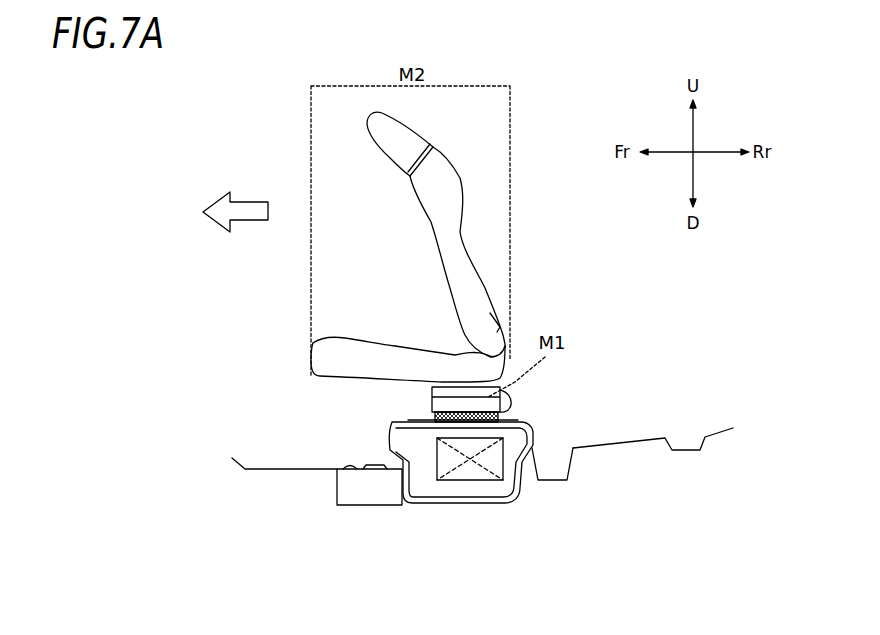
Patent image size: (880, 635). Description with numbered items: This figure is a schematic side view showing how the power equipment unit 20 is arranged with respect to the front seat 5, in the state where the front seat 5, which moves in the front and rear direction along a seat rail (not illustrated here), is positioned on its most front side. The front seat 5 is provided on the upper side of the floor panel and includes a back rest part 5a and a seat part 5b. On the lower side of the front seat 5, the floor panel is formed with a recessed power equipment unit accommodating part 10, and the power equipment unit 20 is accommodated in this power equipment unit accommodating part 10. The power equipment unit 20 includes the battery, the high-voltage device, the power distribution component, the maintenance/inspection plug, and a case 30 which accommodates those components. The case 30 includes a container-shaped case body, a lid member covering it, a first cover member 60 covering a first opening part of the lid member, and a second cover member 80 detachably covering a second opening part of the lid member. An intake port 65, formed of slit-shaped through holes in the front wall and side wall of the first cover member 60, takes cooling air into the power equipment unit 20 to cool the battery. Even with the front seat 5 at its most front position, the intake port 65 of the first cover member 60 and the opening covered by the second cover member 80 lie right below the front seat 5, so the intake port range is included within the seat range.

The front seat 5 is at (492, 240).
The back rest part 5a is at (445, 175).
The seat part 5b is at (352, 347).
The power equipment unit accommodating part 10 is at (480, 505).
The power equipment unit 20 is at (380, 446).
The case 30 is at (525, 485).
The first cover member 60 is at (510, 407).
The intake port 65 is at (455, 407).
The second cover member 80 is at (422, 418).